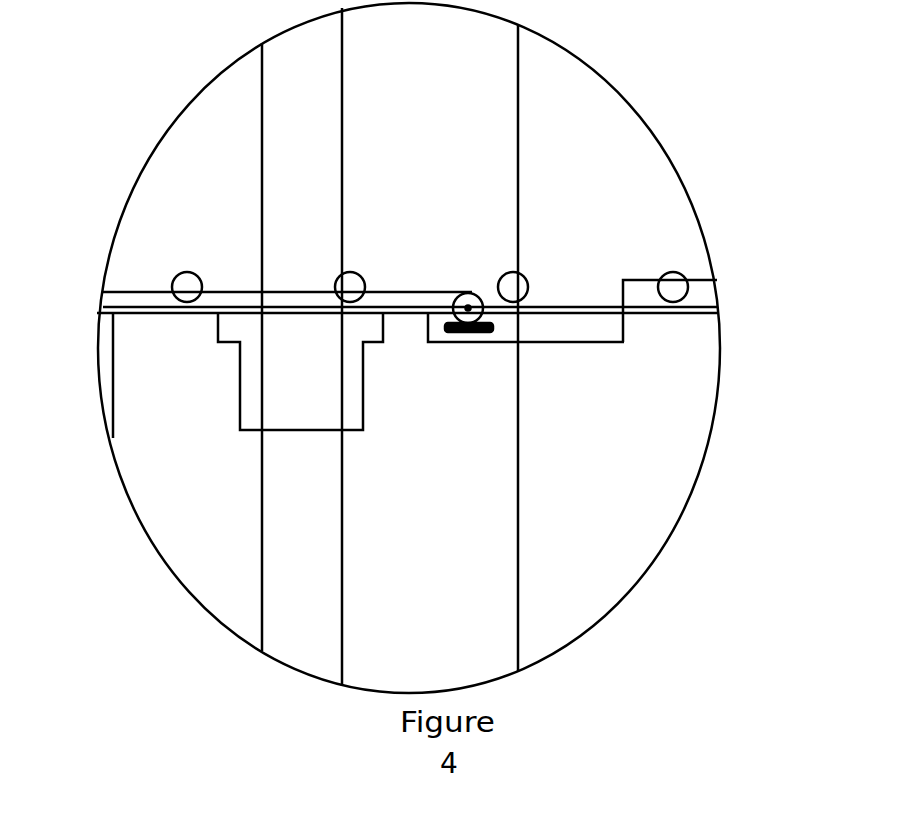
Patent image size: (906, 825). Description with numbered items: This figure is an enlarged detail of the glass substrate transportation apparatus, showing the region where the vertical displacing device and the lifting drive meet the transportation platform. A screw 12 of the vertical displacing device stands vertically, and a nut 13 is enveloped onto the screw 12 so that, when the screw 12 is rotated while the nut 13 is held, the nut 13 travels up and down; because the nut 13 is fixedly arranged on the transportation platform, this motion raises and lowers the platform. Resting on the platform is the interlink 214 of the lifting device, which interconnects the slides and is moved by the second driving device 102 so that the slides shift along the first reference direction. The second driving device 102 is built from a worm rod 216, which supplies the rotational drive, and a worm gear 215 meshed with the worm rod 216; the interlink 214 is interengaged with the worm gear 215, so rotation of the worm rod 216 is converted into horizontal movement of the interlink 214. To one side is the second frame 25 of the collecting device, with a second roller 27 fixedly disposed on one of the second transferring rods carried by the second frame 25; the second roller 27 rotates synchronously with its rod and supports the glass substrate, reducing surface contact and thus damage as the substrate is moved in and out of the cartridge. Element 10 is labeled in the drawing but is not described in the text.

The housing 10 is at (492, 653).
The screw 12 is at (302, 162).
The nut 13 is at (252, 393).
The second frame 25 is at (703, 297).
The second roller 27 is at (672, 284).
The second driving device 102 is at (492, 311).
The interlink 214 is at (148, 291).
The worm gear 215 is at (485, 312).
The worm rod 216 is at (490, 331).